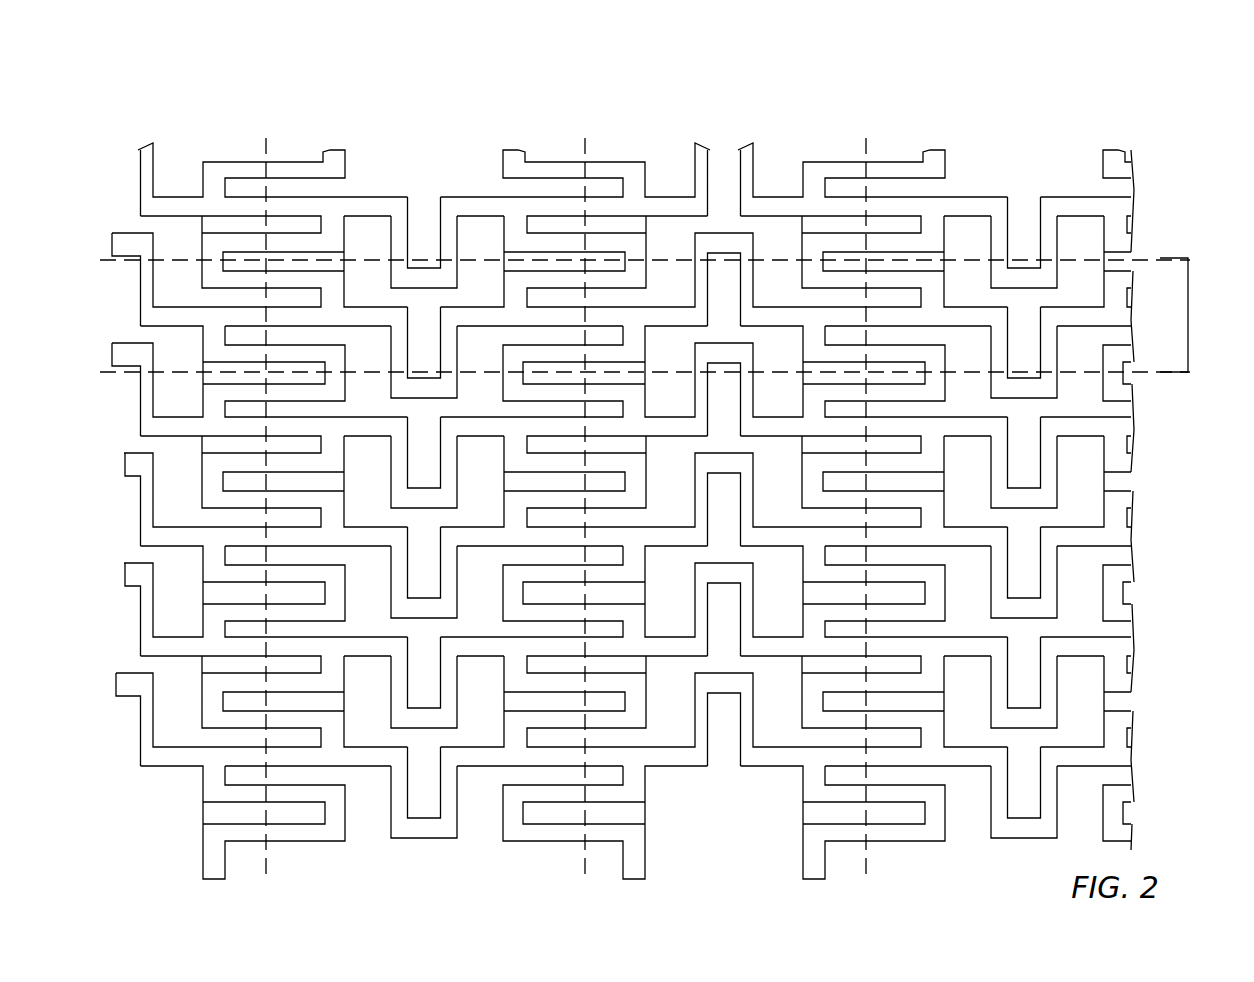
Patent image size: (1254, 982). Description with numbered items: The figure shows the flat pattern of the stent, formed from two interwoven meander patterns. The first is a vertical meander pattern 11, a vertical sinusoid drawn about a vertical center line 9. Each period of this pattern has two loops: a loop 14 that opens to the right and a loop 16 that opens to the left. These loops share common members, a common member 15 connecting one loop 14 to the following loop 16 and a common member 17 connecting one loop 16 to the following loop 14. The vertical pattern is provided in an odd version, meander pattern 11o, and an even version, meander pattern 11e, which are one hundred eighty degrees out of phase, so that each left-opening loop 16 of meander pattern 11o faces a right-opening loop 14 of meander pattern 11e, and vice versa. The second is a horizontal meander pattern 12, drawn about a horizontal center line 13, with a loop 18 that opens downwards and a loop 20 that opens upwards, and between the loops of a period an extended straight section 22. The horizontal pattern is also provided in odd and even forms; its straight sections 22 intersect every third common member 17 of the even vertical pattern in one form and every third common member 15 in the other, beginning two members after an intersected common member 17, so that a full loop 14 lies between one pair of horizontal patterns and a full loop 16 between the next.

The vertical center line 9 is at (587, 833).
The meander pattern 11 is at (830, 157).
The meander pattern 11o is at (265, 128).
The meander pattern 11e is at (567, 128).
The meander pattern 12 is at (1057, 345).
The horizontal center line 13 is at (1190, 312).
The loop 14 is at (293, 257).
The common member 15 is at (228, 373).
The loop 16 is at (560, 330).
The common member 17 is at (215, 293).
The loop 18 is at (738, 365).
The loop 20 is at (421, 248).
The straight section 22 is at (460, 200).